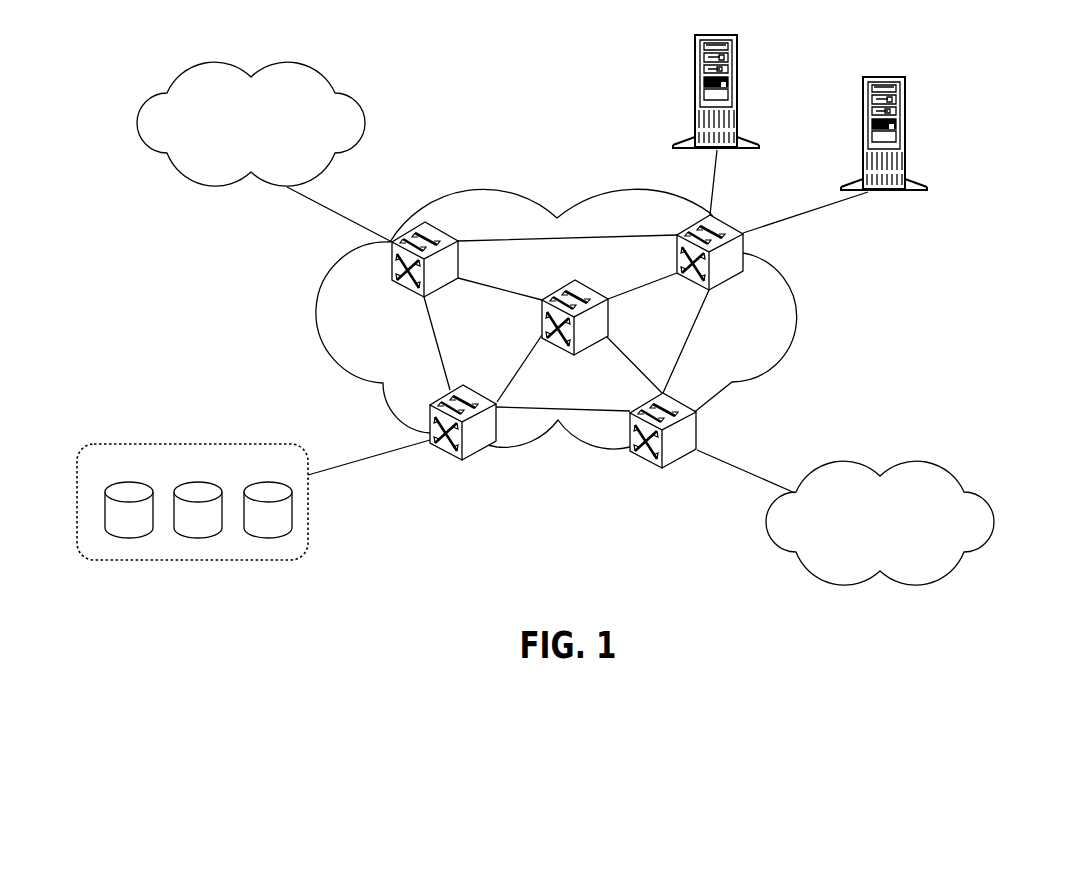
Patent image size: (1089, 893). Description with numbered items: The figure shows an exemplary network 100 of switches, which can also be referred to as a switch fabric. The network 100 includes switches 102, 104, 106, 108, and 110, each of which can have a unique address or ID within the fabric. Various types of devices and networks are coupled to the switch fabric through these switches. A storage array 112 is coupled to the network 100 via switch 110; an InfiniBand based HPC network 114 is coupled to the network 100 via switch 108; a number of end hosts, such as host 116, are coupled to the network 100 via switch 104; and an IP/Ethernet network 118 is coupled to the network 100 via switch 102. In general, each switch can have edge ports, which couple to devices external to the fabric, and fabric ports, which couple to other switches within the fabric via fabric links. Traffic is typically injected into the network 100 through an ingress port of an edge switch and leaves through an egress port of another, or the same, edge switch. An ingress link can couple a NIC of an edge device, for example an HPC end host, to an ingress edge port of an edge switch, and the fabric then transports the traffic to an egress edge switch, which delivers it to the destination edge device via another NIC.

The network 100 is at (805, 318).
The switch 102 is at (663, 468).
The switch 104 is at (745, 273).
The switch 106 is at (575, 280).
The switch 108 is at (392, 282).
The switch 110 is at (462, 384).
The storage array 112 is at (287, 562).
The InfiniBand based HPC network 114 is at (133, 125).
The host 116 is at (930, 186).
The IP/Ethernet network 118 is at (998, 523).